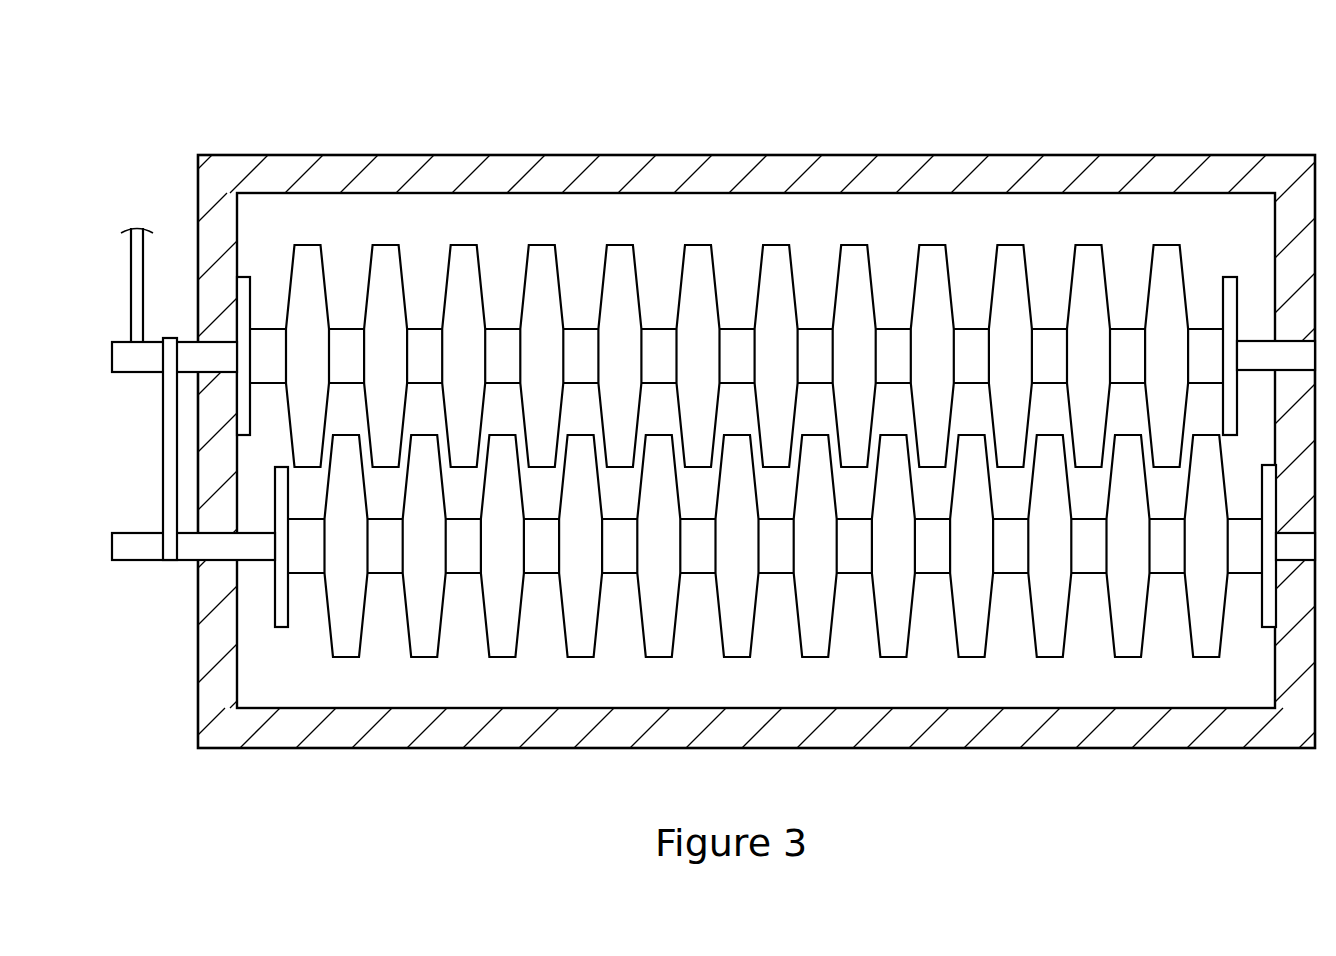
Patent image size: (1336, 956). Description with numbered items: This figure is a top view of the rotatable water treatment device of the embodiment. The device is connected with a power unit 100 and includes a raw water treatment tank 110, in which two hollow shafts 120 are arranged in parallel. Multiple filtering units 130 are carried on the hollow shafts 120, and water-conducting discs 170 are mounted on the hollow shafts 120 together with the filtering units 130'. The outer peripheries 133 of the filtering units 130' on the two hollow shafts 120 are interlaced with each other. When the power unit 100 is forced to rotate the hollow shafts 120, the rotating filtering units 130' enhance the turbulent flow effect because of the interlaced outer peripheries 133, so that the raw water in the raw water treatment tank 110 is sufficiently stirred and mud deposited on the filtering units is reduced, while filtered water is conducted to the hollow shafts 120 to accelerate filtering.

The power unit 100 is at (138, 212).
The raw water treatment tank 110 is at (921, 150).
The hollow shaft 120 is at (123, 372).
The filtering unit 130 is at (775, 628).
The filtering unit 130' is at (766, 437).
The outer periphery 133 is at (383, 462).
The water-conducting disc 170 is at (422, 343).